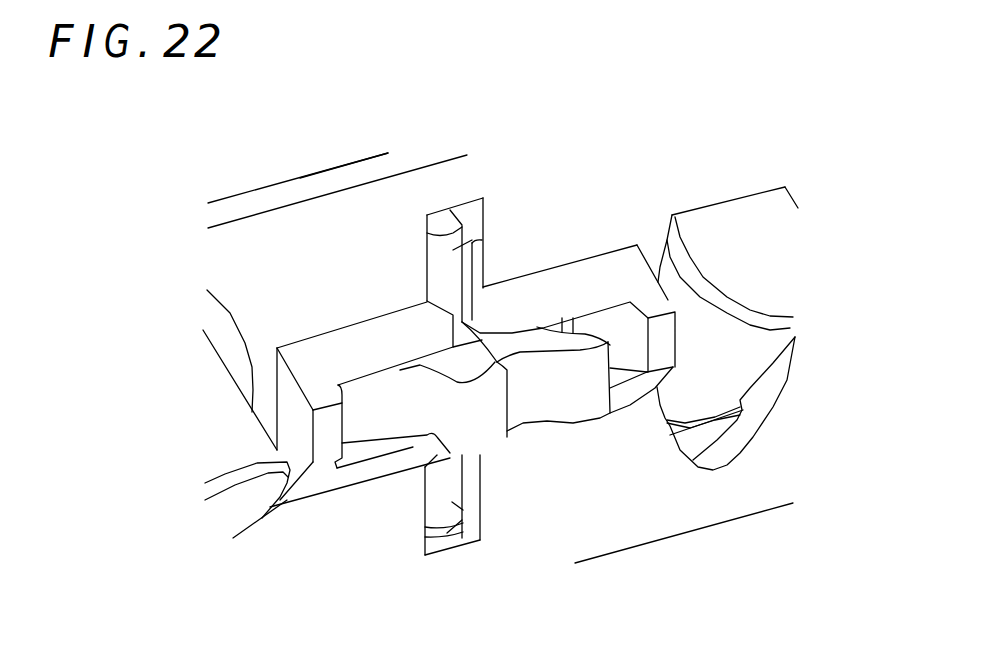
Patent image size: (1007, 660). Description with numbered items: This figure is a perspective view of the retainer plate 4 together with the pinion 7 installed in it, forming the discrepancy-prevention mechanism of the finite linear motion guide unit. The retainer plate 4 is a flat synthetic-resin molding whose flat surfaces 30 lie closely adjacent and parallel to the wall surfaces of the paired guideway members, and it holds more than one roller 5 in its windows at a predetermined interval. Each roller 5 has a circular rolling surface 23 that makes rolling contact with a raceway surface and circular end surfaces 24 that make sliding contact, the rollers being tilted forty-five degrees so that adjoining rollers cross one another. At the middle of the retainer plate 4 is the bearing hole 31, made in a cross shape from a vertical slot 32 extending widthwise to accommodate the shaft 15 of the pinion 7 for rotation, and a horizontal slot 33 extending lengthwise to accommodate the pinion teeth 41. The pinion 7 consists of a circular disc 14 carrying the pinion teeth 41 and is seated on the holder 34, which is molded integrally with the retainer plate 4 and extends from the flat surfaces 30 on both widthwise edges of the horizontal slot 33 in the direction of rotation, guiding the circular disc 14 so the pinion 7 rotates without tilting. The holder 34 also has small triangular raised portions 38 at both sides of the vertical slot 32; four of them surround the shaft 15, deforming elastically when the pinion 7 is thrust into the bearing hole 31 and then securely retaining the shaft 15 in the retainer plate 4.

The retainer plate 4 is at (315, 233).
The roller 5 is at (200, 455).
The pinion 7 is at (567, 403).
The circular disc 14 is at (550, 424).
The shaft 15 is at (485, 205).
The rolling surface 23 is at (212, 427).
The end surface 24 is at (750, 227).
The flat surface 30 is at (353, 220).
The bearing hole 31 is at (407, 452).
The vertical slot 32 is at (482, 253).
The horizontal slot 33 is at (367, 447).
The holder 34 is at (570, 282).
The raised portion 38 is at (412, 301).
The pinion teeth 41 is at (485, 413).